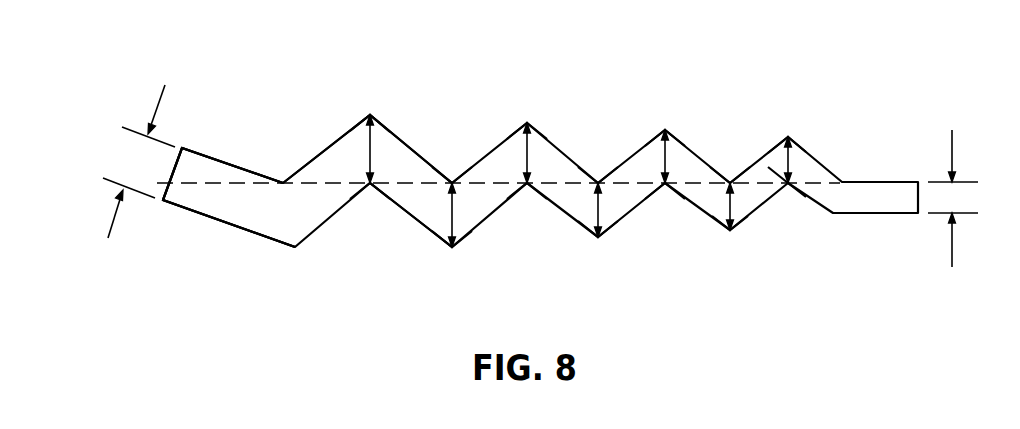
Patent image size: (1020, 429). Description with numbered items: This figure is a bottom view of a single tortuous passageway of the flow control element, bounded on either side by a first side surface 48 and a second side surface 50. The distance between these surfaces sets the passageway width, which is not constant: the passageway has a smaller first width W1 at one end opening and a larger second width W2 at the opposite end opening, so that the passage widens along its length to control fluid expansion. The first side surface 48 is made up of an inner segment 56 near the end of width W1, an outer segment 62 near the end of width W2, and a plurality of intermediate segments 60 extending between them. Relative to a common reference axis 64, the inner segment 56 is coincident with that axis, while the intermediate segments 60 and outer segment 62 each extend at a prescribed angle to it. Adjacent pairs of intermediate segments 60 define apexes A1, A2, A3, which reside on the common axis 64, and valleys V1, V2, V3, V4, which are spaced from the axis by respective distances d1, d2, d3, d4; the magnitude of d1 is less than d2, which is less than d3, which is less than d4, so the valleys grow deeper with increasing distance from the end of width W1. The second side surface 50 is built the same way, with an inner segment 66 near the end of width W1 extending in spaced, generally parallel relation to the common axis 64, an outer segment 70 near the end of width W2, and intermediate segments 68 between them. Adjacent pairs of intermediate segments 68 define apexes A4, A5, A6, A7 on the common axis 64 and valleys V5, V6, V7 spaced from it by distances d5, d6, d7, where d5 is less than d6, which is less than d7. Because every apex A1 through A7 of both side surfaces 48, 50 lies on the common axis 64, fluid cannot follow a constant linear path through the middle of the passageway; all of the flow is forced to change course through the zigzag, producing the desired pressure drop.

The first side surface 48 is at (247, 170).
The second side surface 50 is at (257, 235).
The inner segment 56 is at (868, 182).
The intermediate segments 60 is at (408, 147).
The outer segment 62 is at (216, 160).
The common reference axis 64 is at (327, 183).
The inner segment 66 is at (868, 213).
The intermediate segments 68 is at (410, 217).
The outer segment 70 is at (214, 218).
The valley V1 is at (788, 135).
The valley V2 is at (665, 128).
The valley V3 is at (527, 120).
The valley V4 is at (370, 113).
The valley V5 is at (730, 233).
The valley V6 is at (598, 240).
The valley V7 is at (452, 252).
The apex A1 is at (730, 182).
The apex A2 is at (598, 182).
The apex A3 is at (452, 182).
The apex A4 is at (788, 185).
The apex A5 is at (665, 187).
The apex A6 is at (527, 187).
The apex A7 is at (372, 187).
The distance d1 is at (804, 160).
The distance d2 is at (680, 156).
The distance d3 is at (514, 153).
The distance d4 is at (357, 149).
The distance d5 is at (718, 206).
The distance d6 is at (586, 210).
The distance d7 is at (439, 215).
The first width W1 is at (953, 185).
The second width W2 is at (138, 161).